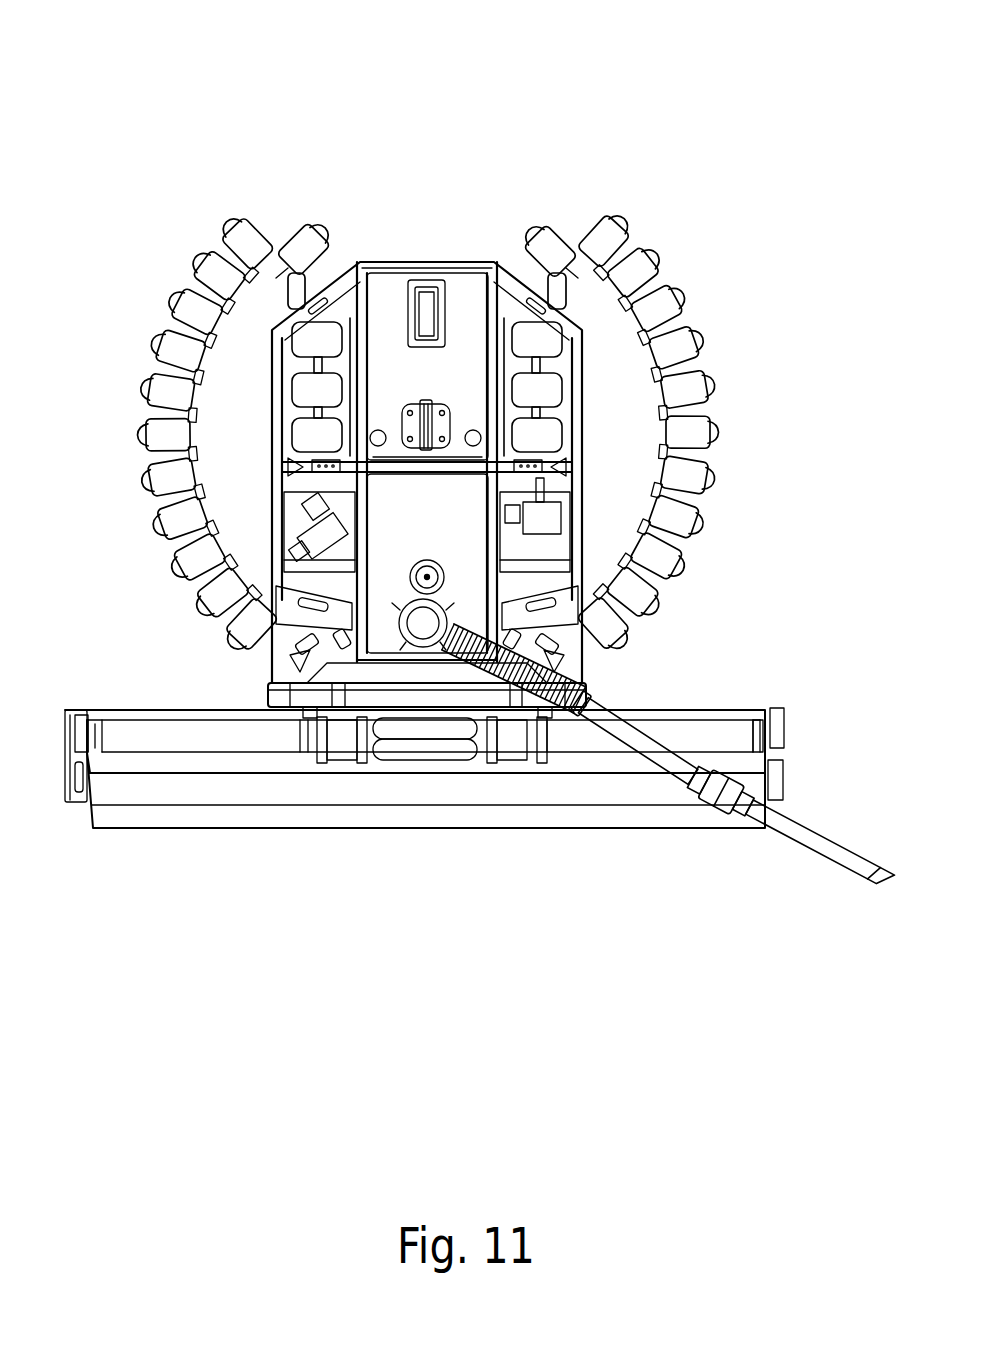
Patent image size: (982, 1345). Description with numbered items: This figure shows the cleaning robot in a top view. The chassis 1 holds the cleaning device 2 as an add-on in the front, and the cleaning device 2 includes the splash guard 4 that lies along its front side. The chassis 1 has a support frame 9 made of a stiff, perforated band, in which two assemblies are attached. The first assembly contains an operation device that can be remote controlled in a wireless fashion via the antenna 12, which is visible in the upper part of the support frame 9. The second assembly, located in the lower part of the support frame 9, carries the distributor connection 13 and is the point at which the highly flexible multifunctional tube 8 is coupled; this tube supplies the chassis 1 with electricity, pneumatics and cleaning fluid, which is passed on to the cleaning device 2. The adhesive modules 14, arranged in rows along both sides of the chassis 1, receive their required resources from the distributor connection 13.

The chassis 1 is at (445, 132).
The cleaning device 2 is at (424, 880).
The splash guard 4 is at (197, 812).
The multifunctional tube 8 is at (833, 861).
The support frame 9 is at (425, 262).
The antenna 12 is at (445, 383).
The distributor connection 13 is at (448, 545).
The adhesive modules 14 is at (160, 480).